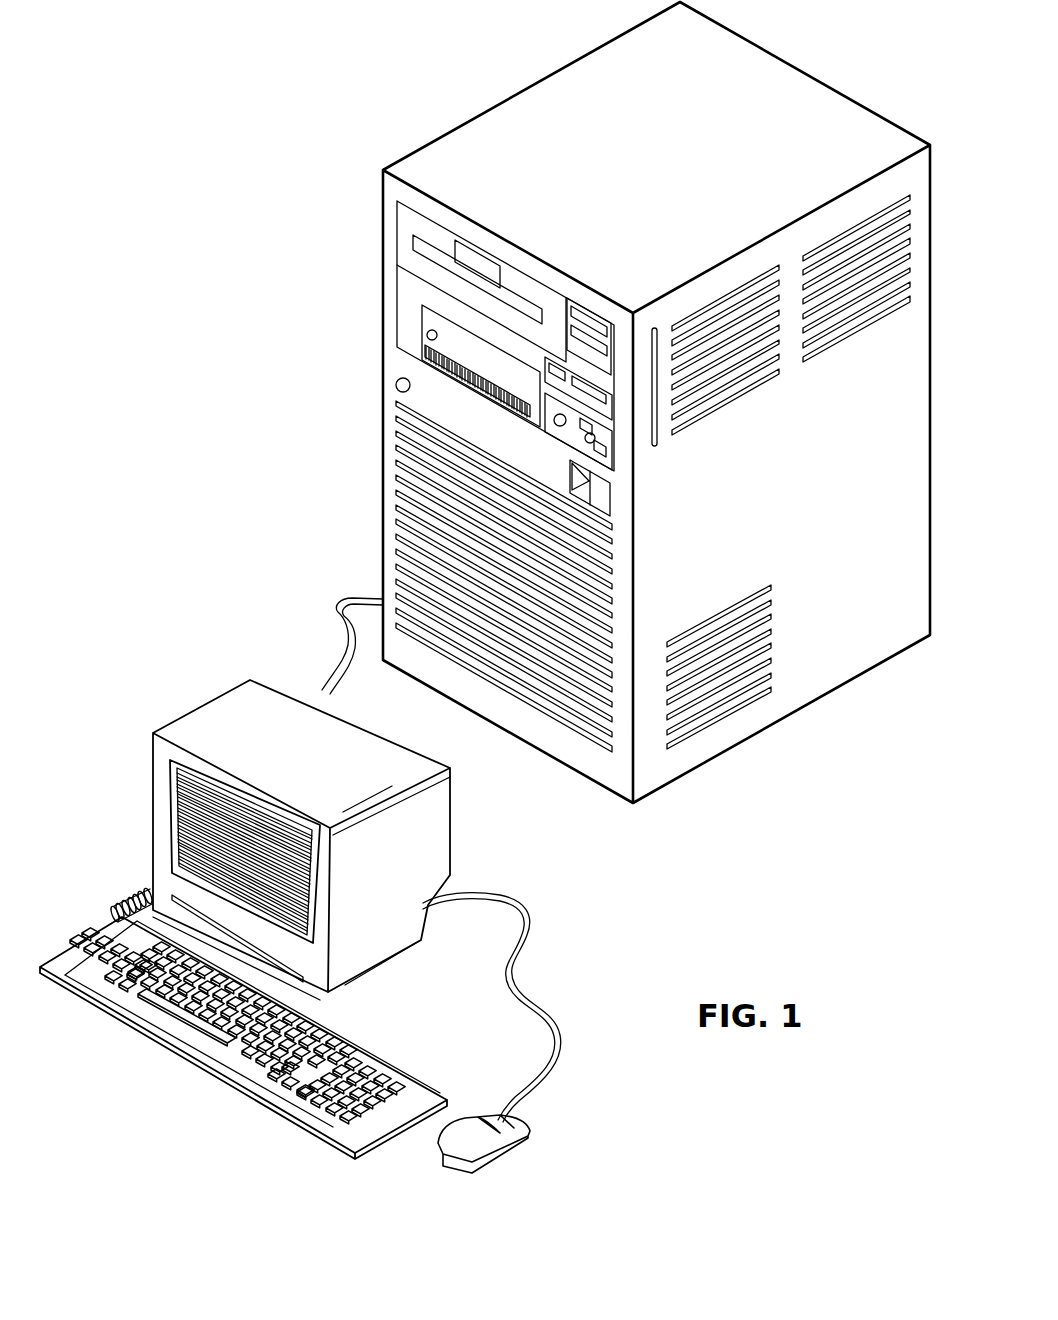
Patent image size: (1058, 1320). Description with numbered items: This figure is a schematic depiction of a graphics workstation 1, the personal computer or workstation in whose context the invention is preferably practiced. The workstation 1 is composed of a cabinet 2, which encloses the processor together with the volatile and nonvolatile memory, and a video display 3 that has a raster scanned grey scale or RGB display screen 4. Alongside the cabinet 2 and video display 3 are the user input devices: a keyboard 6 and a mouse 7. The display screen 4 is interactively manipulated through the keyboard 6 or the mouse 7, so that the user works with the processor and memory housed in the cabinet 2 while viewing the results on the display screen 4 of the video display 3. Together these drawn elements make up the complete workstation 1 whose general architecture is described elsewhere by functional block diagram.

The workstation 1 is at (158, 82).
The cabinet 2 is at (382, 367).
The video display 3 is at (440, 829).
The display screen 4 is at (233, 807).
The keyboard 6 is at (202, 1060).
The mouse 7 is at (492, 1150).